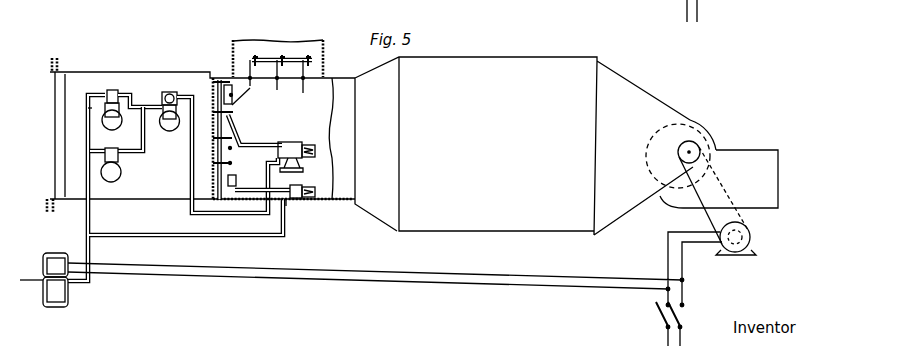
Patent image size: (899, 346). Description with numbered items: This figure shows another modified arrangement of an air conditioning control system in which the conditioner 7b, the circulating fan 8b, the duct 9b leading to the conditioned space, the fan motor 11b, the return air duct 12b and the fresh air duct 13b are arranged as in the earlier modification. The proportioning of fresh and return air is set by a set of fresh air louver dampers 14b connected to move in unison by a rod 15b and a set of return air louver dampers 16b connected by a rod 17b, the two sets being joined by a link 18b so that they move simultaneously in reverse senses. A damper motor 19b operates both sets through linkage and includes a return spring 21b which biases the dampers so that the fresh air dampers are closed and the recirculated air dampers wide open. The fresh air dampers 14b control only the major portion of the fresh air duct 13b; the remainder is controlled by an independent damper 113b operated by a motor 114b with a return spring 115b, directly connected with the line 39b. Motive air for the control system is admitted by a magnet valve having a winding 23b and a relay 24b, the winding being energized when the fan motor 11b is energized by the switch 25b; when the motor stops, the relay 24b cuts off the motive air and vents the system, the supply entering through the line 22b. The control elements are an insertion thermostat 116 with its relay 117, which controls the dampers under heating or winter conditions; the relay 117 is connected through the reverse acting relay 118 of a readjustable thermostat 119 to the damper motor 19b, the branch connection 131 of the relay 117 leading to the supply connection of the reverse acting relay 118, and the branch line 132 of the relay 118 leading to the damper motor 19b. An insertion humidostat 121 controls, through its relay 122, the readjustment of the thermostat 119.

The conditioner 7b is at (524, 146).
The circulating fan 8b is at (706, 126).
The duct leading to the conditioned space 9b is at (752, 150).
The motor driving the fan 11b is at (753, 232).
The return air duct 12b is at (294, 49).
The fresh air duct 13b is at (55, 150).
The fresh air louver dampers 14b is at (237, 117).
The rod 15b is at (213, 95).
The return air louver dampers 16b is at (279, 87).
The rod 17b is at (265, 58).
The link 18b is at (241, 91).
The damper motor 19b is at (284, 142).
The return spring 21b is at (316, 150).
The supply line 22b is at (32, 285).
The winding 23b is at (58, 258).
The relay 24b is at (55, 306).
The switch 25b is at (684, 306).
The line 39b is at (86, 176).
The independent damper 113b is at (228, 180).
The motor 114b is at (289, 205).
The return spring 115b is at (316, 192).
The insertion thermostat 116 is at (122, 165).
The relay 117 is at (121, 142).
The reverse acting relay 118 is at (164, 92).
The readjustable thermostat 119 is at (183, 96).
The insertion humidostat 121 is at (90, 108).
The relay 122 is at (107, 93).
The branch connection 131 is at (145, 148).
The branch line 132 is at (232, 214).